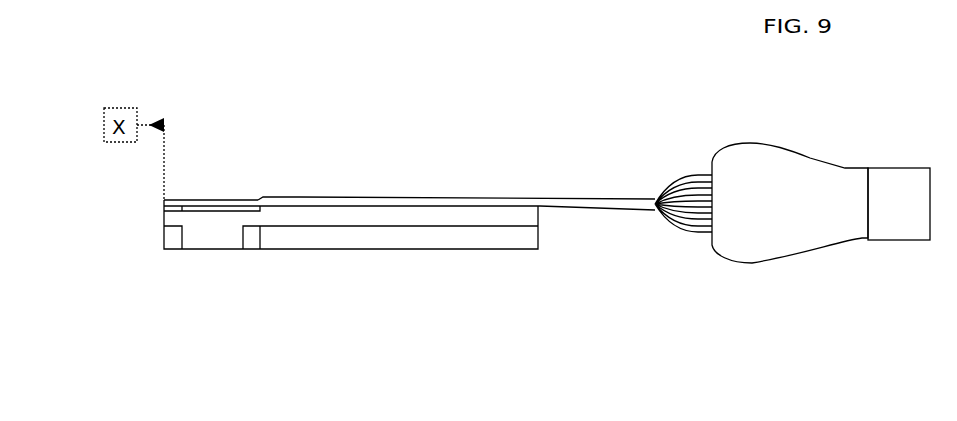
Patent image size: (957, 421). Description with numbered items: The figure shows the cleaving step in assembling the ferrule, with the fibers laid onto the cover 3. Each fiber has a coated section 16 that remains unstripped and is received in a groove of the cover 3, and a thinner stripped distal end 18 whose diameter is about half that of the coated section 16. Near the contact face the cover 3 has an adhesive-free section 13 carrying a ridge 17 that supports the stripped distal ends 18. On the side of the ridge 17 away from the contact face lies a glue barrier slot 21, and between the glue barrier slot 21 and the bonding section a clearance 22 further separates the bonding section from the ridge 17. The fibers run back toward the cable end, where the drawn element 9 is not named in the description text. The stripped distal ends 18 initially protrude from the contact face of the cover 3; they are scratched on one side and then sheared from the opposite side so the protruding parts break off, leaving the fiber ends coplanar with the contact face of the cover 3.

The cover 3 is at (513, 249).
The handle 9 is at (845, 168).
The adhesive-free section 13 is at (217, 180).
The coated section 16 is at (502, 197).
The ridge 17 is at (179, 207).
The stripped distal end 18 is at (232, 199).
The glue barrier slot 21 is at (188, 225).
The clearance 22 is at (218, 216).